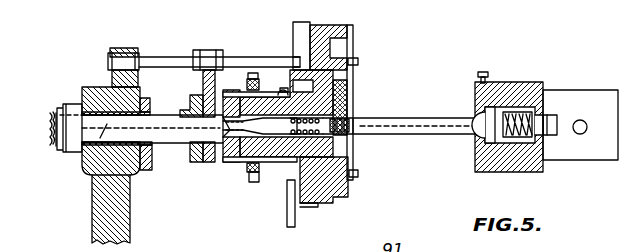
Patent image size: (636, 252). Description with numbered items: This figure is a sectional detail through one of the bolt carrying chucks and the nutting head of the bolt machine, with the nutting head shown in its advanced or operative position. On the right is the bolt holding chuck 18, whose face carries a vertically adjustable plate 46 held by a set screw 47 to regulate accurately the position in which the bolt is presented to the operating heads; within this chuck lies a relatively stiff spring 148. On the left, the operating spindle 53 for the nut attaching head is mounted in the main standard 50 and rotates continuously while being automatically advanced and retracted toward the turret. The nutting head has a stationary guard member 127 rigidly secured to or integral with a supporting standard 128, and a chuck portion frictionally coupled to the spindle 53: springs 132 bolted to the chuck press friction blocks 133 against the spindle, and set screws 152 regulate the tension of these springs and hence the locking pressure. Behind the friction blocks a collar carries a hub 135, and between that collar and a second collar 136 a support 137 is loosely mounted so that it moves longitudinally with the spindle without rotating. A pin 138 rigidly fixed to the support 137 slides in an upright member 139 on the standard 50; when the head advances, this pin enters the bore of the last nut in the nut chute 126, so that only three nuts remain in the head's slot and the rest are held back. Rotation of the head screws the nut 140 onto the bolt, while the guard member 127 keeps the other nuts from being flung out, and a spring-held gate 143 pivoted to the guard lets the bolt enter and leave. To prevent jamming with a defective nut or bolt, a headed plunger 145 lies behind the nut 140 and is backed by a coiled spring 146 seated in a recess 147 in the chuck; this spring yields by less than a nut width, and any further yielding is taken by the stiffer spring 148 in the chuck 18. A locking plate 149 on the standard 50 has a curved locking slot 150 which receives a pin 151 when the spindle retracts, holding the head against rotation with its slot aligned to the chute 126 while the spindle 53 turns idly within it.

The bolt holding chuck 18 is at (552, 160).
The vertically adjustable plate 46 is at (480, 140).
The set screw 47 is at (487, 73).
The main standard 50 is at (92, 223).
The operating spindle 53 is at (82, 167).
The nut chute 126 is at (292, 38).
The stationary guard member 127 is at (340, 193).
The supporting standard 128 is at (343, 27).
The spring 132 is at (265, 97).
The friction block 133 is at (245, 178).
The hub 135 is at (227, 160).
The second collar 136 is at (208, 160).
The support 137 is at (203, 50).
The pin 138 is at (247, 58).
The upright member 139 is at (120, 52).
The nut 140 is at (355, 115).
The exit gate 143 is at (355, 155).
The headed plunger 145 is at (355, 97).
The coiled spring 146 is at (318, 206).
The recess 147 is at (323, 222).
The relatively stiff spring 148 is at (558, 90).
The locking plate 149 is at (147, 175).
The curved locking slot 150 is at (148, 153).
The pin 151 is at (188, 113).
The set screw 152 is at (243, 183).